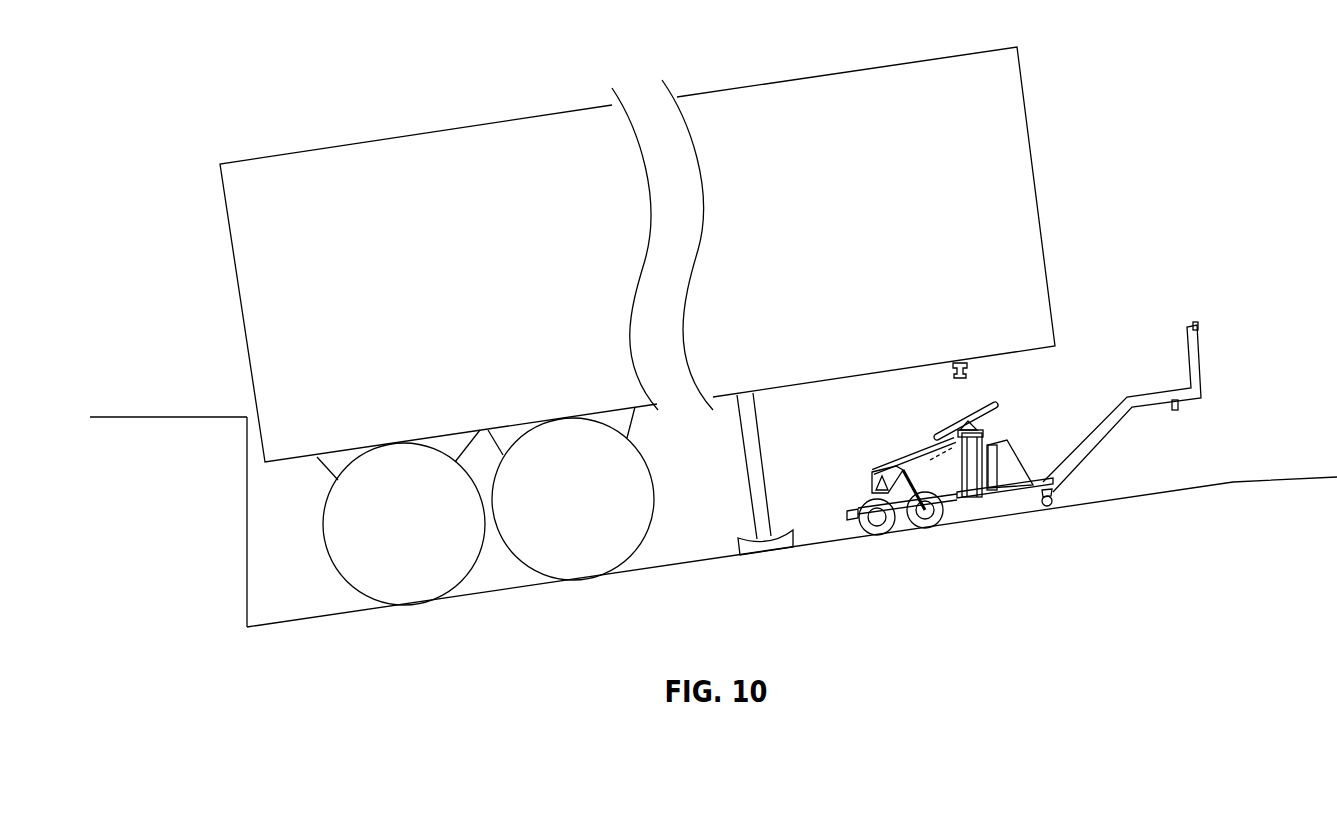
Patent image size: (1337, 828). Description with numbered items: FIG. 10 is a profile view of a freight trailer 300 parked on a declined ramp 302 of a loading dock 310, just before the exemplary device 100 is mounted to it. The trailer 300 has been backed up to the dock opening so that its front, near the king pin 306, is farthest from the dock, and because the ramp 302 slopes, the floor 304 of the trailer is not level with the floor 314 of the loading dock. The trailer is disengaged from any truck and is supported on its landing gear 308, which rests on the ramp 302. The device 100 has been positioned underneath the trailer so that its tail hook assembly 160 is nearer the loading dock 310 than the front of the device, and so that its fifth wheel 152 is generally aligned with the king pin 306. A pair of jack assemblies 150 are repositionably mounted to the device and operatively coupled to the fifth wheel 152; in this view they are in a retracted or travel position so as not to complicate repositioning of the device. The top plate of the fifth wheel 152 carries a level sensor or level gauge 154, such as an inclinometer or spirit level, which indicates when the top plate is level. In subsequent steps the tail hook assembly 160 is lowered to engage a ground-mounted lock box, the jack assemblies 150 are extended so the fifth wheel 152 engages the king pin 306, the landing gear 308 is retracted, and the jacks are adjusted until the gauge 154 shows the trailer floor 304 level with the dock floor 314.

The device 100 is at (1117, 443).
The jack assemblies 150 is at (980, 497).
The fifth wheel 152 is at (937, 432).
The level sensor or level gauge 154 is at (953, 422).
The tail hook assembly 160 is at (890, 467).
The freight trailer 300 is at (417, 299).
The declined ramp 302 is at (495, 593).
The floor 304 is at (478, 430).
The king pin 306 is at (970, 367).
The landing gear 308 is at (748, 503).
The loading dock 310 is at (245, 507).
The floor 314 is at (157, 415).